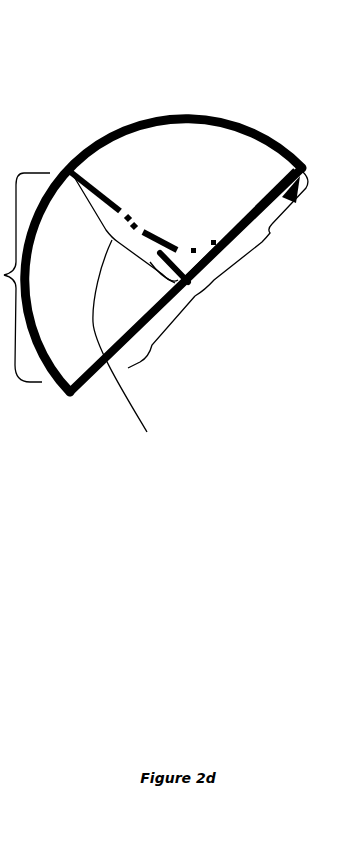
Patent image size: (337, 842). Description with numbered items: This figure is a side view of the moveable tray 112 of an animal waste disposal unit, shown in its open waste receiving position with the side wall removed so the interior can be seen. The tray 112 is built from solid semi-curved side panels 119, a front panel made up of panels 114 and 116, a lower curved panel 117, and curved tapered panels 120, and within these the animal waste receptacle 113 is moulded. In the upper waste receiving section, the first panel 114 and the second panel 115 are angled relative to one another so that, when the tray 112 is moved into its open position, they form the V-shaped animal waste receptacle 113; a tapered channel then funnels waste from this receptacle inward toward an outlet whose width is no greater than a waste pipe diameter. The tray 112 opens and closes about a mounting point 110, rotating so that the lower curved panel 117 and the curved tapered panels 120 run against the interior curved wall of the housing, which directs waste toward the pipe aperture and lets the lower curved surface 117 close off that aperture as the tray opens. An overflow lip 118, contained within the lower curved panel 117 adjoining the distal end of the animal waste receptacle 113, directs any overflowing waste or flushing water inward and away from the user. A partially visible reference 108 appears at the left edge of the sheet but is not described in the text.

The side panel 108 is at (25, 317).
The mounting point 110 is at (190, 283).
The moveable tray 112 is at (277, 415).
The animal waste receptacle 113 is at (180, 181).
The first panel 114 is at (268, 232).
The second panel 115 is at (145, 351).
The front panel portion 116 is at (164, 344).
The lower curved panel 117 is at (0, 110).
The overflow lip 118 is at (70, 170).
The semi-curved side panel 119 is at (117, 298).
The curved tapered panel 120 is at (305, 143).